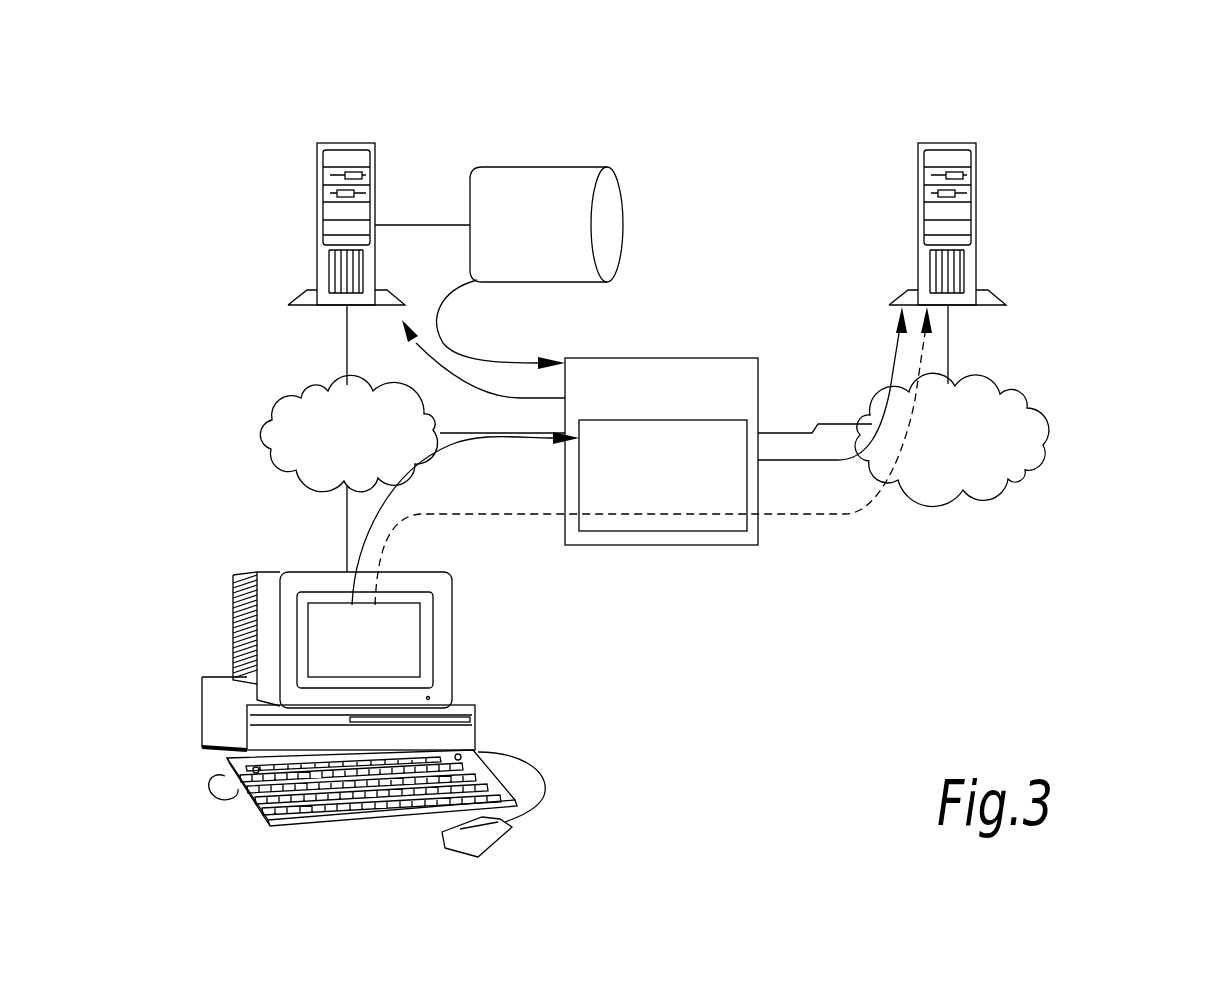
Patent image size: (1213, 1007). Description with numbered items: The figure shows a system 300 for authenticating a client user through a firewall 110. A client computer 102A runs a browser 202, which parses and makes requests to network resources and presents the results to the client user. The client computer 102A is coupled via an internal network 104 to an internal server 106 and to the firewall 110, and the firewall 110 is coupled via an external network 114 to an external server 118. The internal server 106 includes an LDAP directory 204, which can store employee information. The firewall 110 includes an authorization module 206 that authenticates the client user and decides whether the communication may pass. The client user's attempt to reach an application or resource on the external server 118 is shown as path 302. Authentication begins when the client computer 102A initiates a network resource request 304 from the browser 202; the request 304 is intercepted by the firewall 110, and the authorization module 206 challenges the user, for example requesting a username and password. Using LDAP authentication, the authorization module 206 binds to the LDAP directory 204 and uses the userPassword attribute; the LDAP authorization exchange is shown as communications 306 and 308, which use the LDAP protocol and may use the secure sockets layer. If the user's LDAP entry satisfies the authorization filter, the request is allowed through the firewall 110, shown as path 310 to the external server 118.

The system 300 is at (1093, 63).
The internal server 106 is at (317, 212).
The LDAP directory 204 is at (614, 169).
The external server 118 is at (977, 213).
The internal network 104 is at (278, 395).
The external network 114 is at (1035, 392).
The firewall 110 is at (737, 352).
The authorization module 206 is at (665, 531).
The client computer 102A is at (232, 648).
The browser 202 is at (318, 612).
The network resource request 304 is at (453, 446).
The communication 306 is at (423, 353).
The communication 308 is at (494, 357).
The path 310 is at (893, 363).
The path 302 is at (845, 512).